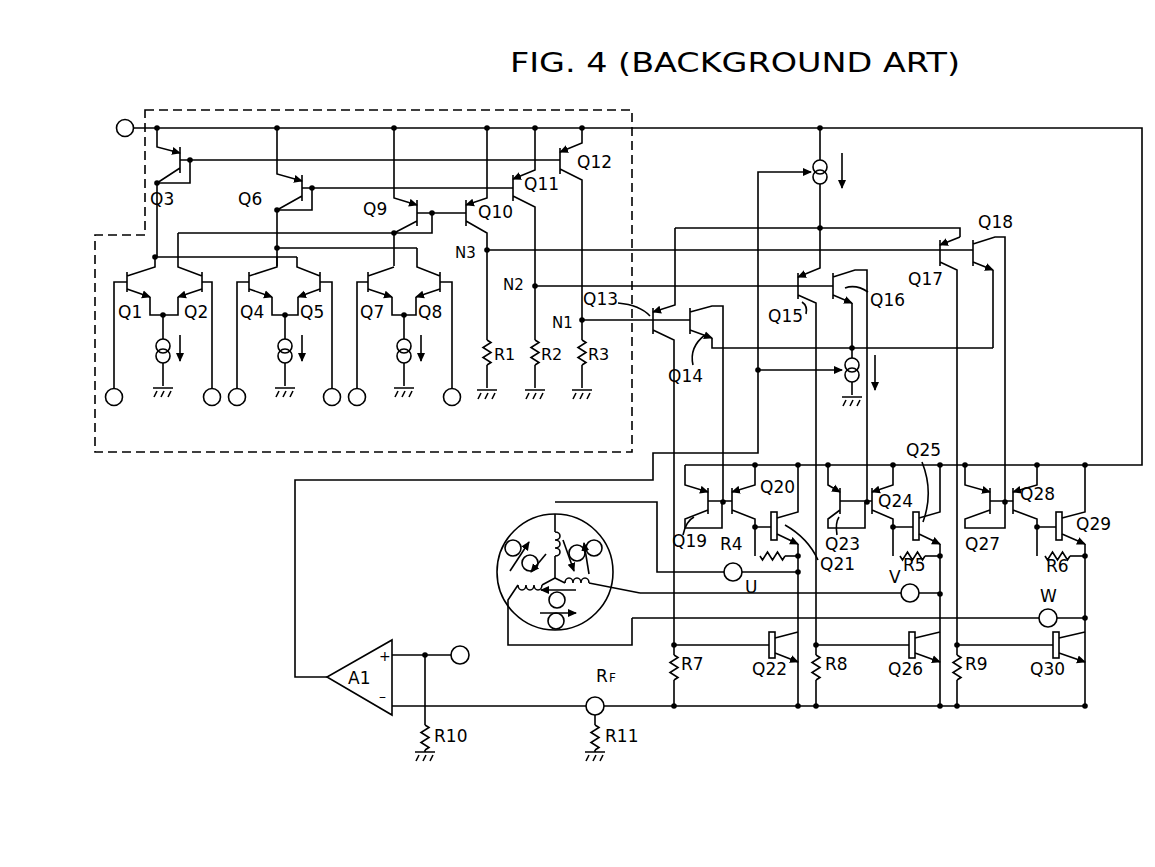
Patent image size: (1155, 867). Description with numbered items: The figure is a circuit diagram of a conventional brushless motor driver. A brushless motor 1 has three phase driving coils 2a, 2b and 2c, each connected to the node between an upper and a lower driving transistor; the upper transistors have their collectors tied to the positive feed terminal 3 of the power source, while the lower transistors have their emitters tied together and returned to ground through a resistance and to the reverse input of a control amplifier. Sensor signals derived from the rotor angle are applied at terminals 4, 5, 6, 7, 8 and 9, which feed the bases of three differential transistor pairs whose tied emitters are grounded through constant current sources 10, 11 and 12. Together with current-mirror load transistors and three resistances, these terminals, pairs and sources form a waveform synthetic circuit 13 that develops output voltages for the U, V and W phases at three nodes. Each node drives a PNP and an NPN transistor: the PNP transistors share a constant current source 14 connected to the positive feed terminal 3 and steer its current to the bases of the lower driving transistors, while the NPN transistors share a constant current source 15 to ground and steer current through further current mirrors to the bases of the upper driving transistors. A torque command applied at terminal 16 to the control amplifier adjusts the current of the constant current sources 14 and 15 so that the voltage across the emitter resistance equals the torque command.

The brushless motor 1 is at (498, 551).
The driving coil 2a is at (568, 530).
The driving coil 2b is at (597, 585).
The driving coil 2c is at (518, 585).
The positive feed terminal 3 is at (124, 118).
The terminal 4 is at (121, 402).
The terminal 5 is at (204, 402).
The terminal 6 is at (244, 402).
The terminal 7 is at (324, 402).
The terminal 8 is at (364, 402).
The terminal 9 is at (458, 404).
The constant current source 10 is at (153, 347).
The constant current source 11 is at (276, 347).
The constant current source 12 is at (396, 347).
The waveform synthetic circuit 13 is at (214, 456).
The constant current source 14 is at (812, 177).
The constant current source 15 is at (850, 386).
The terminal 16 is at (452, 647).